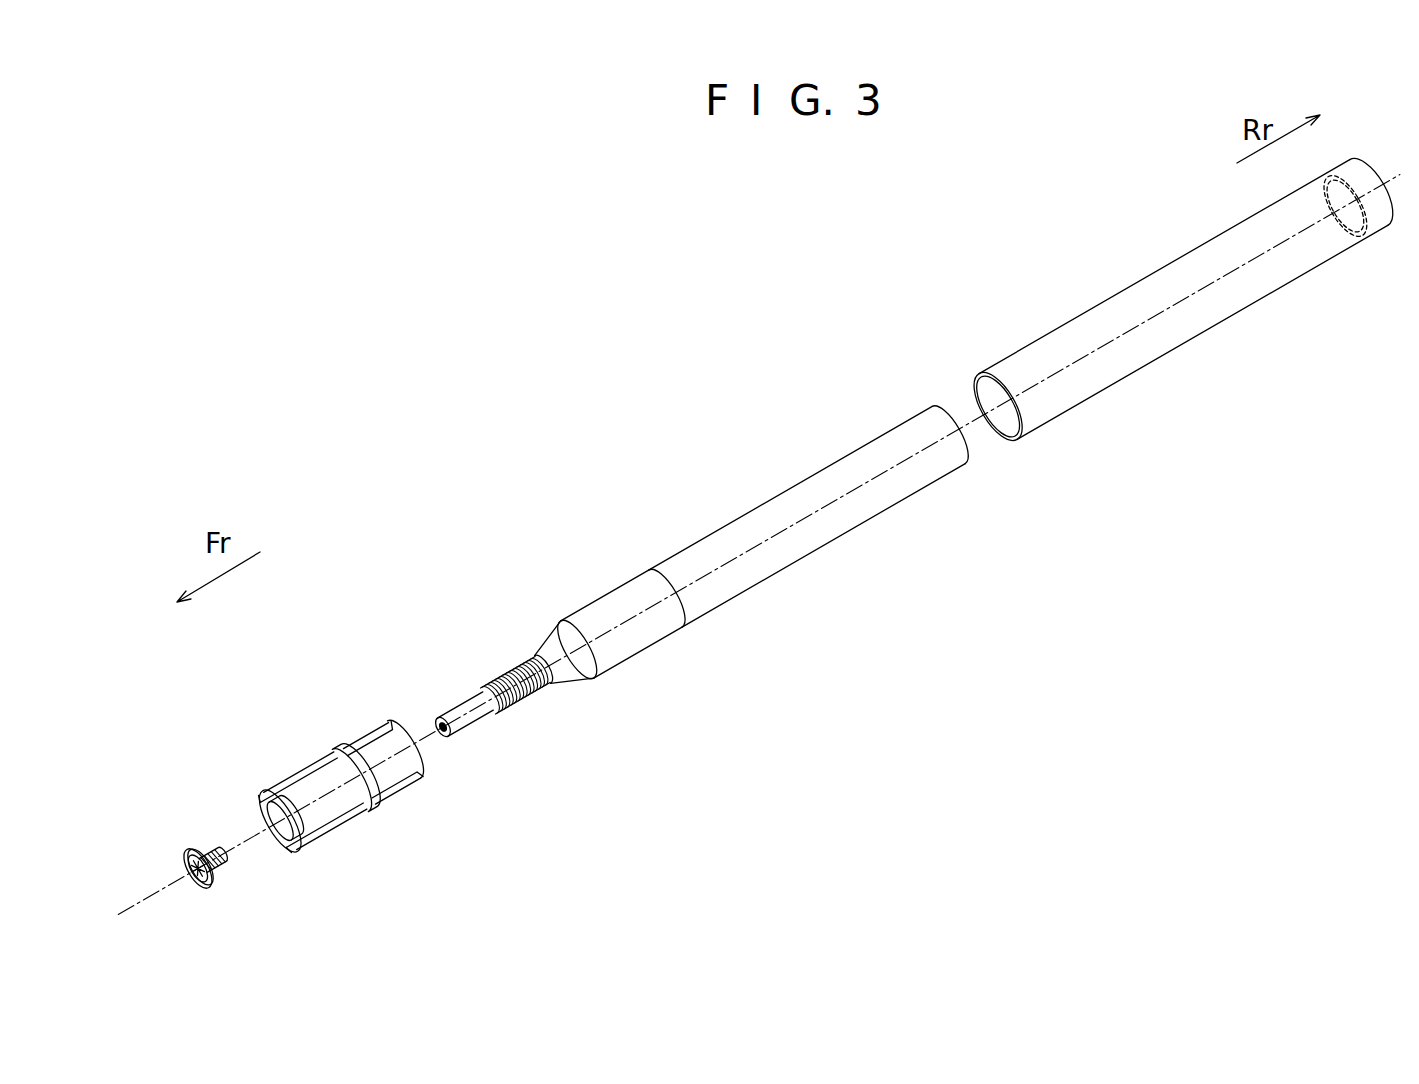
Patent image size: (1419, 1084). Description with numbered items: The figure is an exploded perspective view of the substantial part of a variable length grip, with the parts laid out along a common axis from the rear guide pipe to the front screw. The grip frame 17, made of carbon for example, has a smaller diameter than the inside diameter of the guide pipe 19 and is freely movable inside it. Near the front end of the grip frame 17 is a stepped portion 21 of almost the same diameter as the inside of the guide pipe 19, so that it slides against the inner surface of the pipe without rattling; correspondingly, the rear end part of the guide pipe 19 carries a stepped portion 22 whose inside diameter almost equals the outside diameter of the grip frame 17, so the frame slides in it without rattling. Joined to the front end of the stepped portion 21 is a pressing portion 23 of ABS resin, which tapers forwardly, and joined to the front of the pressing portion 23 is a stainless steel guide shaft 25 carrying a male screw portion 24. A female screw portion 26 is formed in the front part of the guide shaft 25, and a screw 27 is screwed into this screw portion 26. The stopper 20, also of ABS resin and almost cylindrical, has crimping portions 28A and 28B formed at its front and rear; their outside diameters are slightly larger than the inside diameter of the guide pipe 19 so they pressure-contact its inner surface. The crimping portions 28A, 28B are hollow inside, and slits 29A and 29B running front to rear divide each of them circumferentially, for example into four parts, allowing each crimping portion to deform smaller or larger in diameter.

The grip frame 17 is at (853, 522).
The guide pipe 19 is at (1137, 287).
The stopper 20 is at (315, 767).
The stepped portion 21 is at (610, 604).
The stepped portion 22 is at (1353, 232).
The pressing portion 23 is at (556, 637).
The screw portion 24 is at (507, 674).
The guide shaft 25 is at (458, 704).
The screw portion 26 is at (447, 742).
The screw 27 is at (187, 855).
The crimping portion 28A is at (266, 794).
The crimping portion 28B is at (398, 772).
The slit 29A is at (271, 851).
The slit 29B is at (371, 742).